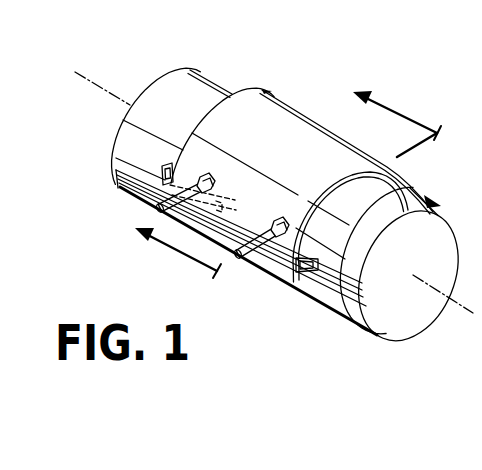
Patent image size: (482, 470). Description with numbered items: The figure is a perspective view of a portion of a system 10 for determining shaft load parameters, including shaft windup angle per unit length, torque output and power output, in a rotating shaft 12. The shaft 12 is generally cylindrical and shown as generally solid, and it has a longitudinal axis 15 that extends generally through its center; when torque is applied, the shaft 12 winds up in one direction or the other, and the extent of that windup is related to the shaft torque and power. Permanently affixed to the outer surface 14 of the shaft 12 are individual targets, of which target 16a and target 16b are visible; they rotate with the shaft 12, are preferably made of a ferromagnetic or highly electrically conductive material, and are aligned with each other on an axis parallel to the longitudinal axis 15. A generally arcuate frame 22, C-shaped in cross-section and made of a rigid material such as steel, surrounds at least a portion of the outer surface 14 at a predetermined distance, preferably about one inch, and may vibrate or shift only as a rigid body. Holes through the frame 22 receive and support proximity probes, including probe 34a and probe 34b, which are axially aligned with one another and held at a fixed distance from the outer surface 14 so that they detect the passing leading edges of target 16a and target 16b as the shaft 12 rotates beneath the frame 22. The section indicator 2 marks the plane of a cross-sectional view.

The system 10 is at (214, 70).
The rotating shaft 12 is at (157, 92).
The frame 22 is at (289, 100).
The outer surface 14 is at (116, 176).
The longitudinal axis 15 is at (452, 303).
The target 16a is at (164, 188).
The target 16b is at (297, 283).
The probe 34a is at (170, 212).
The probe 34b is at (257, 258).
The section line 2- 2 is at (282, 173).